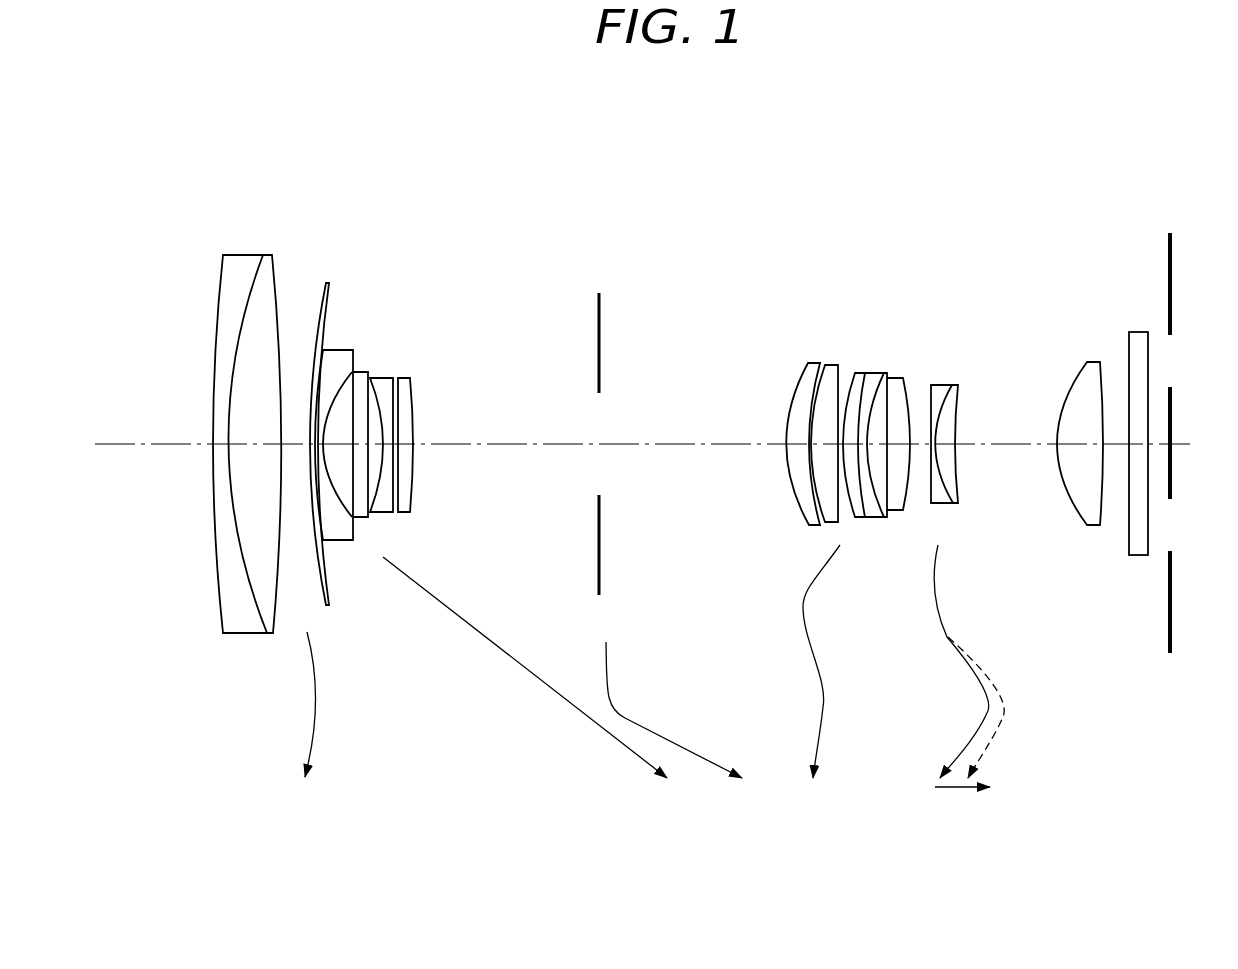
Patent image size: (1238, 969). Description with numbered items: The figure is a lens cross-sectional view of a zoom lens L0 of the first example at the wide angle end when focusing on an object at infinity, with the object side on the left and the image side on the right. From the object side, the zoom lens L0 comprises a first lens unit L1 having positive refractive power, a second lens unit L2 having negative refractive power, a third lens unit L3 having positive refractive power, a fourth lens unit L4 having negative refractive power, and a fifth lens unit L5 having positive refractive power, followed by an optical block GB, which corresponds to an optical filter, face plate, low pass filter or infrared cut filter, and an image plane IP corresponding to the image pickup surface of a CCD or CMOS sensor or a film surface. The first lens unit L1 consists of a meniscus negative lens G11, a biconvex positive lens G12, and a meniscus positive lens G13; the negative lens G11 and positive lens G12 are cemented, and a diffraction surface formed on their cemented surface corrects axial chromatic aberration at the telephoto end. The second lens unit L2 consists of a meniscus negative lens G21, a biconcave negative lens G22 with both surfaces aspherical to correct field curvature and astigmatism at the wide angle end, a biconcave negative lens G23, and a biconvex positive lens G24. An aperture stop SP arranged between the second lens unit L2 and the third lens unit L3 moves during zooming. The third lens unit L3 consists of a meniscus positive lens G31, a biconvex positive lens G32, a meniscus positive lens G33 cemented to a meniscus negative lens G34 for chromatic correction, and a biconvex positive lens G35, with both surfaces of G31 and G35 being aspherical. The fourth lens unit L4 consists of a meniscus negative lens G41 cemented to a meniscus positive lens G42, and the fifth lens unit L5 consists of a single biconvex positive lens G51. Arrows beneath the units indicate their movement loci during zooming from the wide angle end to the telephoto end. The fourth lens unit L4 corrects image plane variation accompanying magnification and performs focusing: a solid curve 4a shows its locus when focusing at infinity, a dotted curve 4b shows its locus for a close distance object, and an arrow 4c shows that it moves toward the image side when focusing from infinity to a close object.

The zoom lens L0 is at (208, 143).
The first lens unit L1 is at (208, 200).
The second lens unit L2 is at (335, 292).
The third lens unit L3 is at (780, 290).
The fourth lens unit L4 is at (963, 290).
The fifth lens unit L5 is at (1053, 313).
The meniscus negative lens G11 is at (233, 255).
The biconvex positive lens G12 is at (270, 255).
The meniscus positive lens G13 is at (327, 283).
The meniscus negative lens G21 is at (340, 350).
The biconcave negative lens G22 is at (357, 372).
The biconcave negative lens G23 is at (390, 378).
The biconvex positive lens G24 is at (410, 393).
The meniscus positive lens G31 is at (805, 368).
The biconvex positive lens G32 is at (823, 362).
The meniscus positive lens G33 is at (855, 372).
The meniscus negative lens G34 is at (880, 372).
The biconvex positive lens G35 is at (903, 380).
The meniscus negative lens G41 is at (938, 383).
The meniscus positive lens G42 is at (957, 385).
The biconvex positive lens G51 is at (1089, 362).
The aperture stop SP is at (597, 327).
The optical block GB is at (1138, 334).
The image plane IP is at (1172, 255).
The solid curve 4a is at (943, 661).
The dotted curve 4b is at (991, 707).
The arrow 4c is at (962, 805).